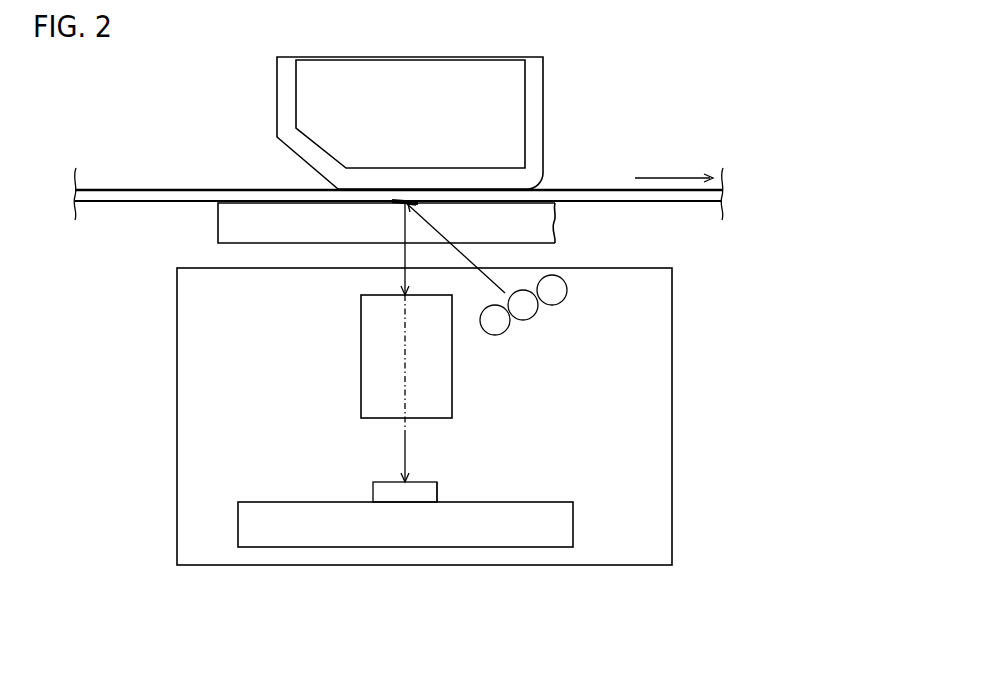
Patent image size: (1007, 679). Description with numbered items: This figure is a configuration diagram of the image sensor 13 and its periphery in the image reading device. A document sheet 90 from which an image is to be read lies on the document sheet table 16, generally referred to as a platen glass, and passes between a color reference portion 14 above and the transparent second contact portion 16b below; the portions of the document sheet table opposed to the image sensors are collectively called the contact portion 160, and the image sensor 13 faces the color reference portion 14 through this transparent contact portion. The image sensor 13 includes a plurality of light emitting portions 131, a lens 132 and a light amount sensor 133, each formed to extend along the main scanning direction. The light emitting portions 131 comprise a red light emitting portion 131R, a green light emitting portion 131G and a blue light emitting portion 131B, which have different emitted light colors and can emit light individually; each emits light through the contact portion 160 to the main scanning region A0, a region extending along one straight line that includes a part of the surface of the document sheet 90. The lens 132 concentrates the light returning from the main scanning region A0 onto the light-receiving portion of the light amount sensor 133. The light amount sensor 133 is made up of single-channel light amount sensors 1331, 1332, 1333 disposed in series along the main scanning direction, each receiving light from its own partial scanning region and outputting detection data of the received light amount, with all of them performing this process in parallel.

The color reference portion 14 is at (545, 81).
The document sheet 90 is at (609, 190).
The document sheet table 16 is at (168, 266).
The second contact portion 16b is at (340, 233).
The contact portion 160 is at (218, 232).
The image sensor 13 is at (672, 305).
The main scanning region A0 is at (403, 207).
The light emitting portions 131 is at (529, 310).
The red light emitting portion 131R is at (498, 334).
The green light emitting portion 131G is at (538, 323).
The blue light emitting portion 131B is at (589, 313).
The lens 132 is at (361, 398).
The light amount sensor 133 is at (471, 468).
The single-channel light amount sensor 1331 is at (437, 500).
The single-channel light amount sensor 1332 is at (437, 490).
The single-channel light amount sensor 1333 is at (437, 483).